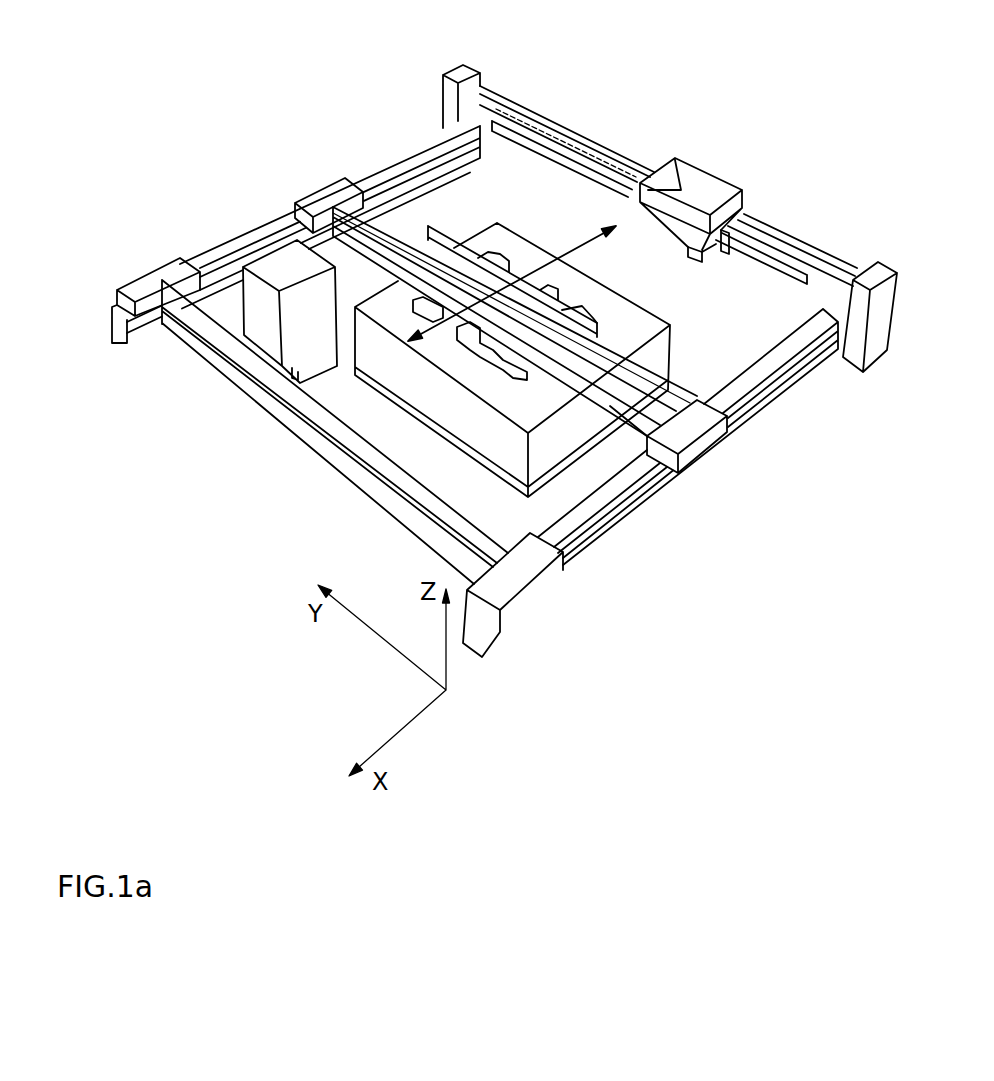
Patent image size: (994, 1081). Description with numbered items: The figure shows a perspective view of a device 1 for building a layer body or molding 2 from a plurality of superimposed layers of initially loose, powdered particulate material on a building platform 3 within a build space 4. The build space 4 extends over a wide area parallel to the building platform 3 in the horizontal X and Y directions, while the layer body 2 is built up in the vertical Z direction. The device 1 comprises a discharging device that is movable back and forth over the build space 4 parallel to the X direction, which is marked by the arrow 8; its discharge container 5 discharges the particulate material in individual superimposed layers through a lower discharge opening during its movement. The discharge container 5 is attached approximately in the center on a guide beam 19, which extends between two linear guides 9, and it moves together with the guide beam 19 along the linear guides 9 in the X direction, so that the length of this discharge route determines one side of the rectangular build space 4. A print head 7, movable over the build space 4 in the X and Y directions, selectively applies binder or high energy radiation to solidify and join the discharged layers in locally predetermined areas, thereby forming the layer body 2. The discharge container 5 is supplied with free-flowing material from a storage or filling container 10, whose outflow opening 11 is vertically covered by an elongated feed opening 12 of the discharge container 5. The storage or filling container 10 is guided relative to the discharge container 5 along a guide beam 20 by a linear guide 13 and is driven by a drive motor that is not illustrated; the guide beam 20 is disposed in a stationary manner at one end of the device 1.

The device 1 is at (230, 88).
The layer body or molding 2 is at (585, 320).
The building platform 3 is at (427, 420).
The build space 4 is at (377, 400).
The discharge container 5 is at (423, 240).
The print head 7 is at (268, 317).
The arrow 8 is at (570, 256).
The linear guides 9 is at (315, 184).
The storage or filling container 10 is at (705, 185).
The outflow opening 11 is at (694, 270).
The elongated feed opening 12 is at (445, 250).
The linear guide 13 is at (724, 254).
The guide beam 19 is at (633, 420).
The guide beam 20 is at (780, 231).